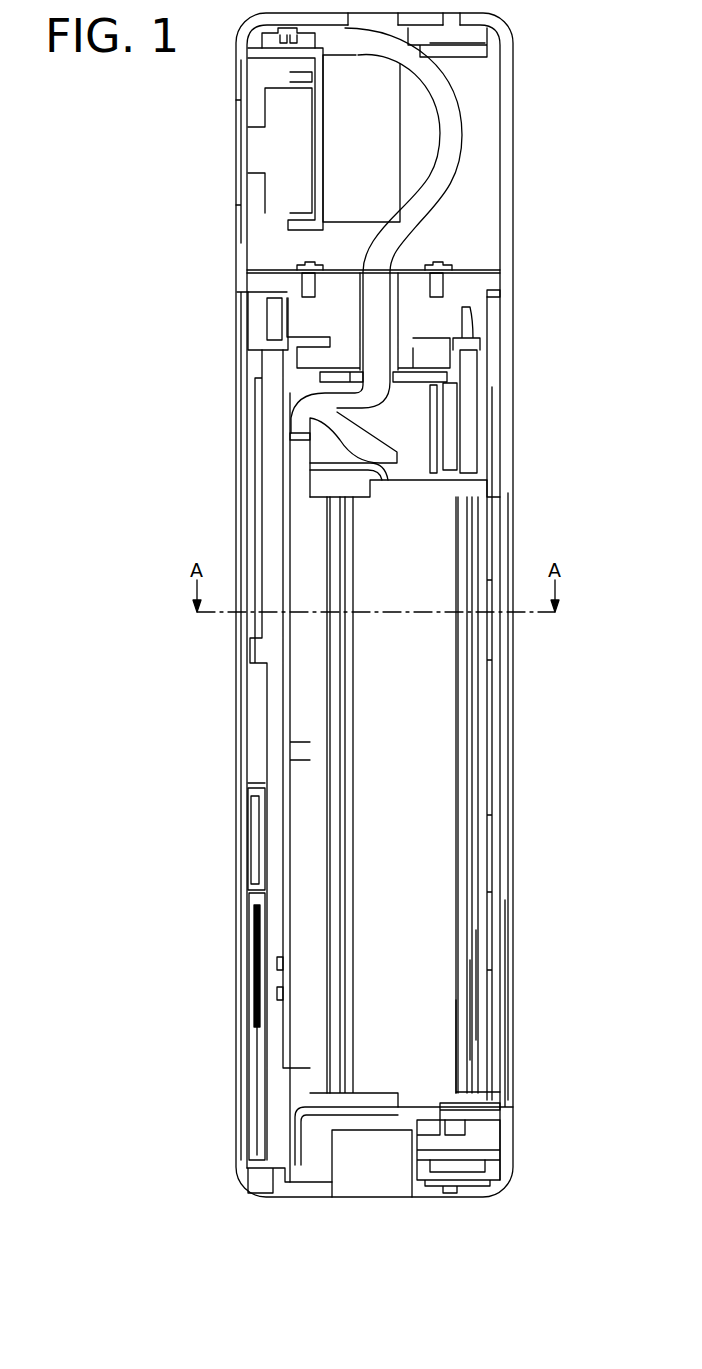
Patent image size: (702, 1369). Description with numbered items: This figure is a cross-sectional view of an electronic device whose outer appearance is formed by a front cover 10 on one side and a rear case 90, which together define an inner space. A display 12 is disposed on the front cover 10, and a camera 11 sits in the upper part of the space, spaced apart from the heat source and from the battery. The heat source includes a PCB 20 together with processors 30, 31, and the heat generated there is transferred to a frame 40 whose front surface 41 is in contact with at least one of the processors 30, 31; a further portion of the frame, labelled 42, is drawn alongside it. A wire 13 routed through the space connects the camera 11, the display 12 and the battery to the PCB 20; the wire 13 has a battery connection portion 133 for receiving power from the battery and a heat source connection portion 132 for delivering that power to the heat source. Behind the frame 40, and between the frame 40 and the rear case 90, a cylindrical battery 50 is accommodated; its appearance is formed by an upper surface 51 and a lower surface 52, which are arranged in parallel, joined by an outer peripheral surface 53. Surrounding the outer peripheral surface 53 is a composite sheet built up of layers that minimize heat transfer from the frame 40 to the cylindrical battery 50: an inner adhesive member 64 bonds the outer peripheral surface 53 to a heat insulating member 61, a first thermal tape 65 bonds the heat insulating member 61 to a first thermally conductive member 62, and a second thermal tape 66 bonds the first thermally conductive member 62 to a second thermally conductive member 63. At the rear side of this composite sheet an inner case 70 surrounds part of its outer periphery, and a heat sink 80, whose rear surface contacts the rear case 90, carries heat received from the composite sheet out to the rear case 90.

The front cover 10 is at (240, 903).
The camera 11 is at (272, 151).
The display 12 is at (240, 388).
The wire 13 is at (450, 143).
The heat source connection portion 132 is at (298, 430).
The battery connection portion 133 is at (368, 436).
The PCB 20 is at (288, 1028).
The processor 30 is at (297, 730).
The processor 31 is at (297, 818).
The frame 40 is at (315, 690).
The front surface 41 is at (310, 500).
The inner wall 42 is at (320, 575).
The cylindrical battery 50 is at (420, 553).
The upper surface 51 is at (403, 490).
The lower surface 52 is at (382, 1093).
The outer peripheral surface 53 is at (452, 1068).
The heat insulating member 61 is at (462, 945).
The first thermally conductive member 62 is at (475, 900).
The second thermally conductive member 63 is at (480, 860).
The inner adhesive member 64 is at (458, 1045).
The first thermal tape 65 is at (470, 1005).
The second thermal tape 66 is at (478, 978).
The inner case 70 is at (495, 778).
The heat sink 80 is at (505, 1072).
The rear case 90 is at (510, 680).